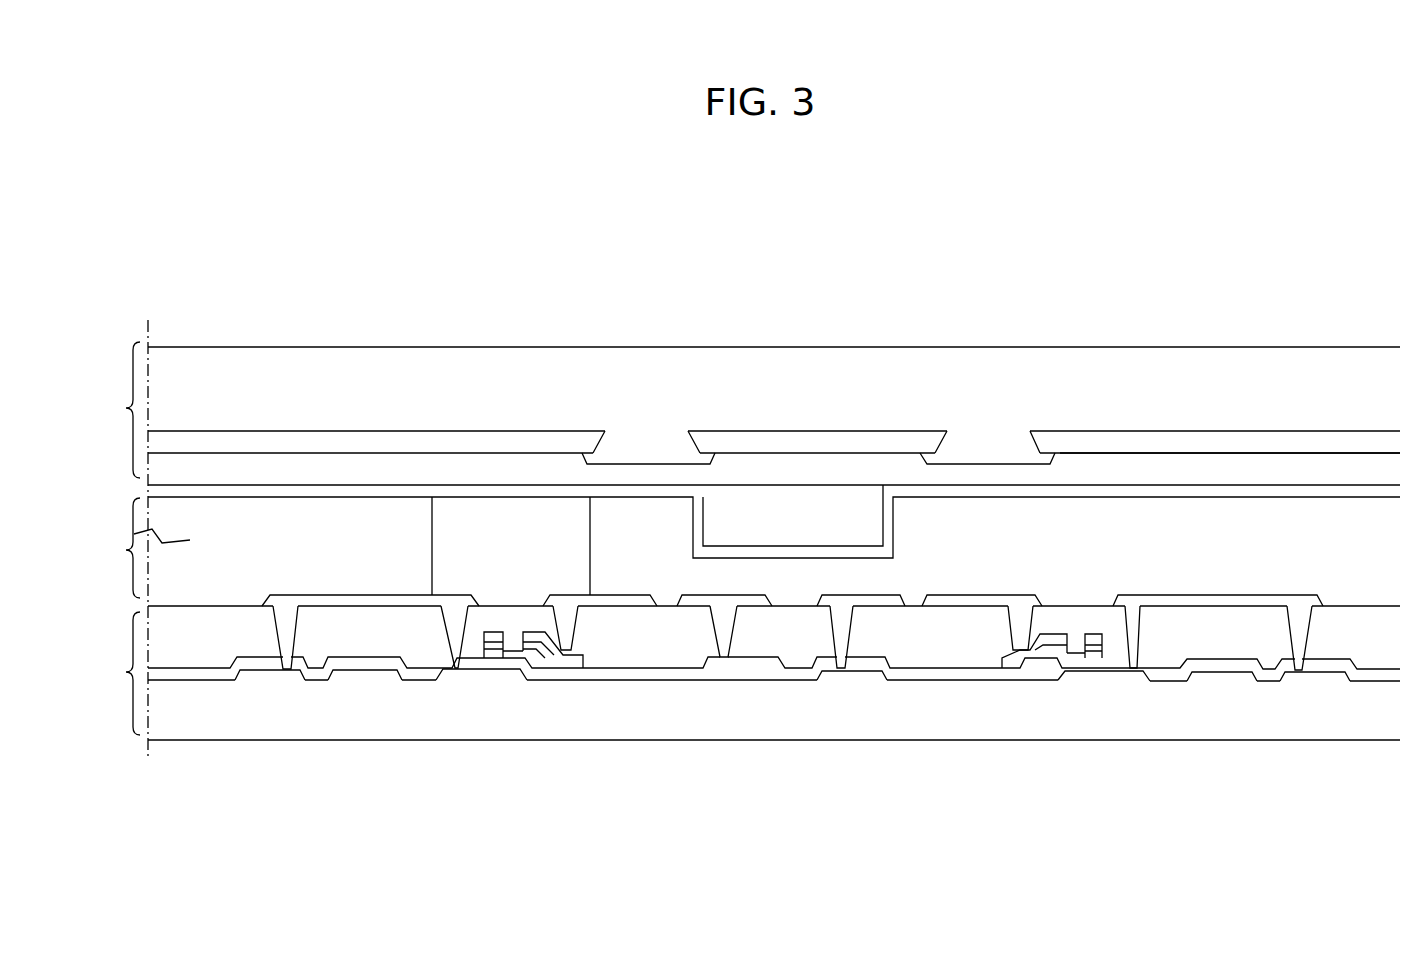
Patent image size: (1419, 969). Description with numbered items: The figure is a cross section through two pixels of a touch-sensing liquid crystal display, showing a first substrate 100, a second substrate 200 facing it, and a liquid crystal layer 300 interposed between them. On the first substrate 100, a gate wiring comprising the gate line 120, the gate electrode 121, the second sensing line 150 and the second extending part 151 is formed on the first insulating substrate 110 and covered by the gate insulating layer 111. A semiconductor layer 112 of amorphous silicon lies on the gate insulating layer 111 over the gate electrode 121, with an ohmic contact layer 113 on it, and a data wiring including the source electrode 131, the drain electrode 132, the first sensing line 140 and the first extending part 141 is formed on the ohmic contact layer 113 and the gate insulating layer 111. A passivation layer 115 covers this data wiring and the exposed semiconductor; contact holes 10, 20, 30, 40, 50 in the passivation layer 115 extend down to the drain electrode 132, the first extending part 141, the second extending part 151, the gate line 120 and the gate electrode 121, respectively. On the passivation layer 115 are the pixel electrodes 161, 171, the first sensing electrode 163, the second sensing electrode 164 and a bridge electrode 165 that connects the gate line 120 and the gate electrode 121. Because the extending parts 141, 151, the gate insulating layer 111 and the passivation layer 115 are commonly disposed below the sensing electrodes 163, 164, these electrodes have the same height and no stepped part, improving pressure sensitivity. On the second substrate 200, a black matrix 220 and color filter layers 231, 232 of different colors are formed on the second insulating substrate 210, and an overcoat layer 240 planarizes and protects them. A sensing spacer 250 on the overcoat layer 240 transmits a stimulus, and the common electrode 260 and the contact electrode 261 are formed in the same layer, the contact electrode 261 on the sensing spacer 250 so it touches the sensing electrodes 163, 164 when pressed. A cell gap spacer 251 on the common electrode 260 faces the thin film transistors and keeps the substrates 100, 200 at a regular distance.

The second substrate 200 is at (113, 410).
The liquid crystal layer 300 is at (113, 548).
The first substrate 100 is at (113, 673).
The second insulating substrate 210 is at (442, 355).
The black matrix 220 is at (720, 445).
The color filter layer 231 is at (632, 447).
The color filter layer 232 is at (971, 447).
The overcoat layer 240 is at (1098, 458).
The sensing spacer 250 is at (858, 497).
The cell gap spacer 251 is at (530, 503).
The common electrode 260 is at (316, 487).
The contact electrode 261 is at (793, 552).
The contact hole 40 is at (280, 590).
The contact hole 50 is at (460, 590).
The contact hole 10 is at (563, 590).
The contact hole 20 is at (727, 607).
The contact hole 30 is at (839, 607).
The first insulating substrate 110 is at (200, 741).
The gate insulating layer 111 is at (903, 670).
The gate line 120 is at (268, 672).
The gate electrode 121 is at (458, 670).
The second sensing line 150 is at (360, 672).
The second extending part 151 is at (826, 680).
The source electrode 131 is at (497, 652).
The drain electrode 132 is at (632, 640).
The ohmic contact layer 113 is at (540, 652).
The semiconductor layer 112 is at (585, 662).
The first sensing line 140 is at (770, 663).
The first extending part 141 is at (717, 662).
The pixel electrode 161 is at (648, 608).
The first sensing electrode 163 is at (748, 602).
The second sensing electrode 164 is at (866, 605).
The bridge electrode 165 is at (418, 600).
The pixel electrode 171 is at (953, 602).
The passivation layer 115 is at (980, 652).